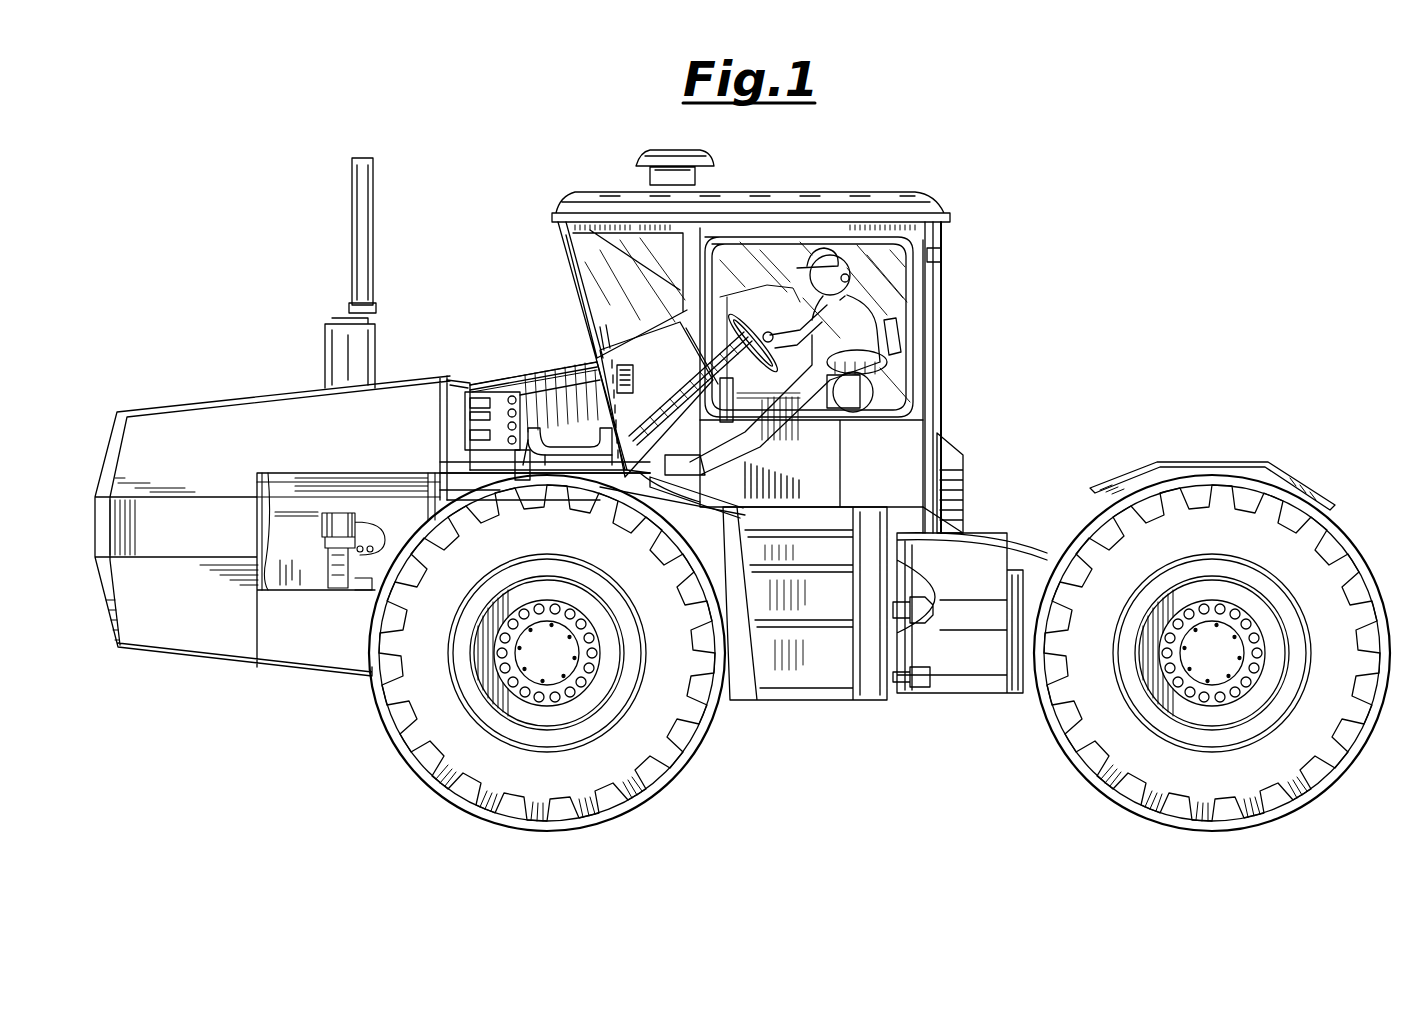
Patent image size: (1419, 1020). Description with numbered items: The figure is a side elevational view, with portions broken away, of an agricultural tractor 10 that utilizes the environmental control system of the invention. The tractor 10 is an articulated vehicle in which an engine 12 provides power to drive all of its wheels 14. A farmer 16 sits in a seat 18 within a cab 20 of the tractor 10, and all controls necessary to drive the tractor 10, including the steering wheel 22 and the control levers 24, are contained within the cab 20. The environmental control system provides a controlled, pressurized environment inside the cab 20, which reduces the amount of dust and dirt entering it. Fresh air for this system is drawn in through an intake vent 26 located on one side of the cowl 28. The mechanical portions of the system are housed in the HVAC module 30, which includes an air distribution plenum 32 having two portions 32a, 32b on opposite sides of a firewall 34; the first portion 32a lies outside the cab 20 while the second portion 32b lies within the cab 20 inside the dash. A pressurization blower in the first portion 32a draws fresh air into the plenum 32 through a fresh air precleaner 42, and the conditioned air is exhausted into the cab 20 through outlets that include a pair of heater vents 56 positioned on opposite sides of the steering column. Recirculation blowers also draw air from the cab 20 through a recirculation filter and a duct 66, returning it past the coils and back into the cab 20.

The agricultural tractor 10 is at (962, 288).
The engine 12 is at (313, 500).
The wheels 14 is at (380, 733).
The farmer 16 is at (880, 332).
The seat 18 is at (905, 377).
The cab 20 is at (941, 325).
The steering wheel 22 is at (579, 364).
The control levers 24 is at (770, 350).
The intake vent 26 is at (470, 383).
The cowl 28 is at (520, 396).
The HVAC module 30 is at (523, 478).
The air distribution plenum 32 is at (578, 367).
The first portion of plenum 32a is at (519, 402).
The second portion of plenum 32b is at (660, 478).
The firewall 34 is at (592, 465).
The fresh air precleaner 42 is at (487, 462).
The heater vents 56 is at (760, 463).
The duct 66 is at (577, 462).